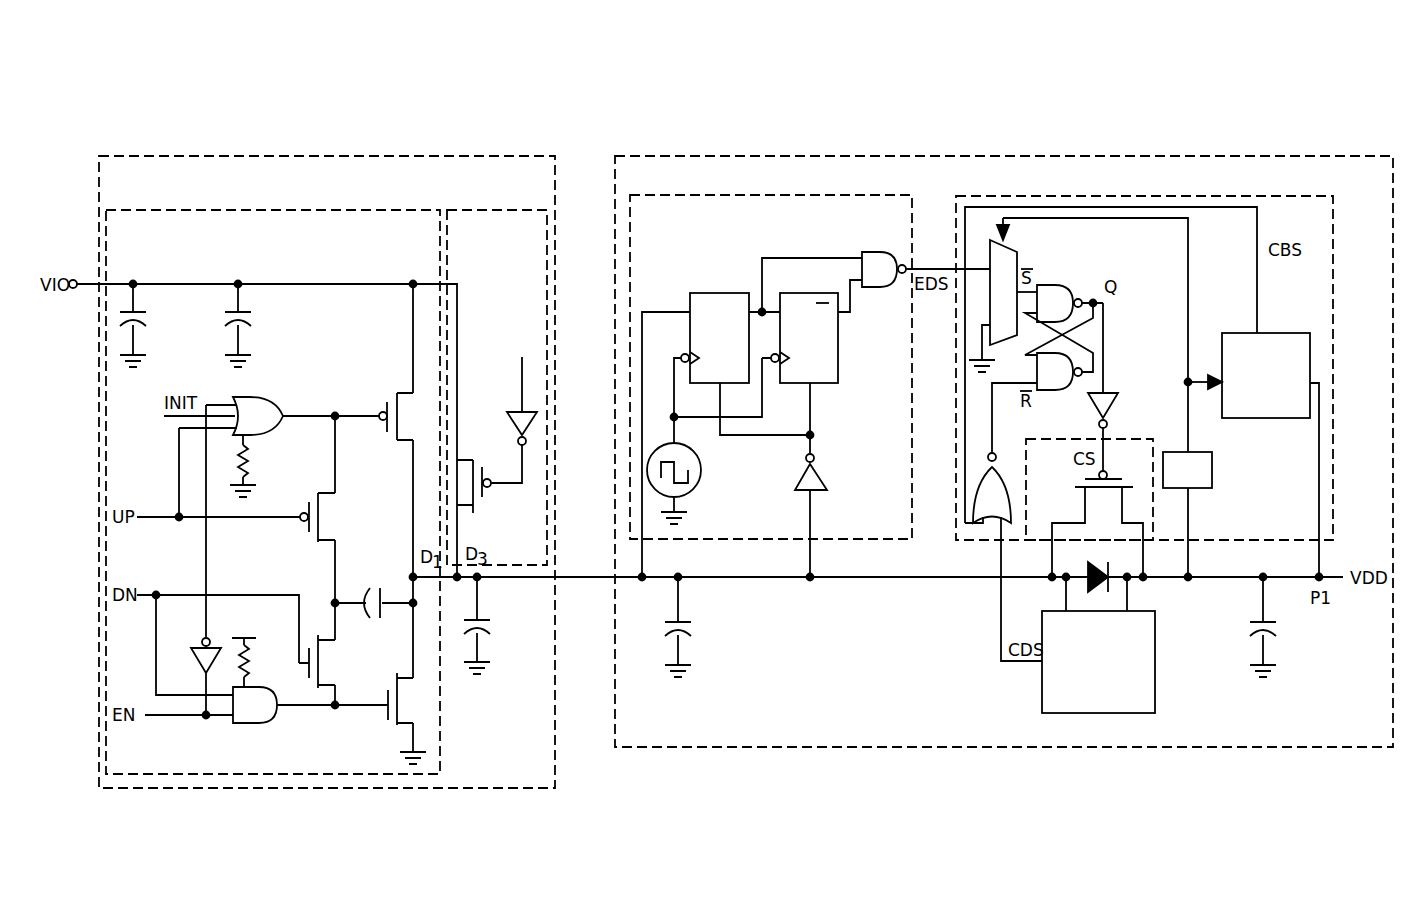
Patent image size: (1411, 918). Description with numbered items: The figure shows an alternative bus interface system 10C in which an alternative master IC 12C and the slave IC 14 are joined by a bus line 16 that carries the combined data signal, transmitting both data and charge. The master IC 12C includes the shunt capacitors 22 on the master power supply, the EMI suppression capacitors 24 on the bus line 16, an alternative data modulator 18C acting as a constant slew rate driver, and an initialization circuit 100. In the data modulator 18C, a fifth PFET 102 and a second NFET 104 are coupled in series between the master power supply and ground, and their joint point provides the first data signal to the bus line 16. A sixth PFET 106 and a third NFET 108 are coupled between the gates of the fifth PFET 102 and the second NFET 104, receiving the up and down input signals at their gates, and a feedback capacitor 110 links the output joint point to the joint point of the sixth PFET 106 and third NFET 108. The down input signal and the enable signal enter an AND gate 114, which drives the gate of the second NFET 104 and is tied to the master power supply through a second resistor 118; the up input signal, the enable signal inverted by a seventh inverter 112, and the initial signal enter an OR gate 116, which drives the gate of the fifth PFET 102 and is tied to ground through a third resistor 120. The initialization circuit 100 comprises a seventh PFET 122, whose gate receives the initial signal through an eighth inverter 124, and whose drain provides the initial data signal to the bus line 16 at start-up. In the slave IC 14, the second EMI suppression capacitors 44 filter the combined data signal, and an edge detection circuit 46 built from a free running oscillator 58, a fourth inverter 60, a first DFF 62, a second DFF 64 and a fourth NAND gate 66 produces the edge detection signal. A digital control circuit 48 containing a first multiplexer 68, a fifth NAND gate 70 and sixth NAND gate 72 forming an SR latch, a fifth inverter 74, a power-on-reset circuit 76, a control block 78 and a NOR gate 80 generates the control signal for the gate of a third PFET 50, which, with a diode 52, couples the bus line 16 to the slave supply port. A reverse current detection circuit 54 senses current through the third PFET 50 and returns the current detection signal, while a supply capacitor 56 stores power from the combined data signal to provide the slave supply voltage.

The alternative bus interface system 10C is at (977, 85).
The alternative master IC 12C is at (140, 194).
The alternative data modulator 18C is at (148, 246).
The initialization circuit 100 is at (492, 246).
The shunt capacitors 22 is at (218, 322).
The OR gate 116 is at (276, 425).
The third resistor 120 is at (257, 466).
The fifth PFET 102 is at (407, 416).
The sixth PFET 106 is at (338, 517).
The third NFET 108 is at (337, 661).
The second NFET 104 is at (356, 718).
The feedback capacitor 110 is at (374, 589).
The seventh inverter 112 is at (192, 674).
The second resistor 118 is at (258, 650).
The AND gate 114 is at (266, 714).
The seventh PFET 122 is at (489, 473).
The eighth inverter 124 is at (513, 389).
The EMI suppression capacitors 24 is at (488, 625).
The bus line 16 is at (582, 579).
The slave IC 14 is at (657, 728).
The edge detection circuit 46 is at (661, 230).
The first D type flip-flop 62 is at (731, 350).
The second D type flip-flop 64 is at (821, 350).
The fourth NAND gate 66 is at (886, 278).
The free running oscillator 58 is at (688, 483).
The fourth inverter 60 is at (822, 515).
The second EMI suppression capacitors 44 is at (669, 627).
The digital control circuit 48 is at (1319, 232).
The first multiplexer 68 is at (1003, 306).
The fifth NAND gate 70 is at (1060, 312).
The sixth NAND gate 72 is at (1060, 381).
The fifth inverter 74 is at (1115, 391).
The NOR gate 80 is at (1003, 503).
The third PFET 50 is at (1097, 528).
The diode 52 is at (1089, 515).
The reverse current detection circuit 54 is at (1089, 704).
The power-on-reset circuit 76 is at (1201, 470).
The control block 78 is at (1257, 406).
The supply capacitor 56 is at (1273, 627).